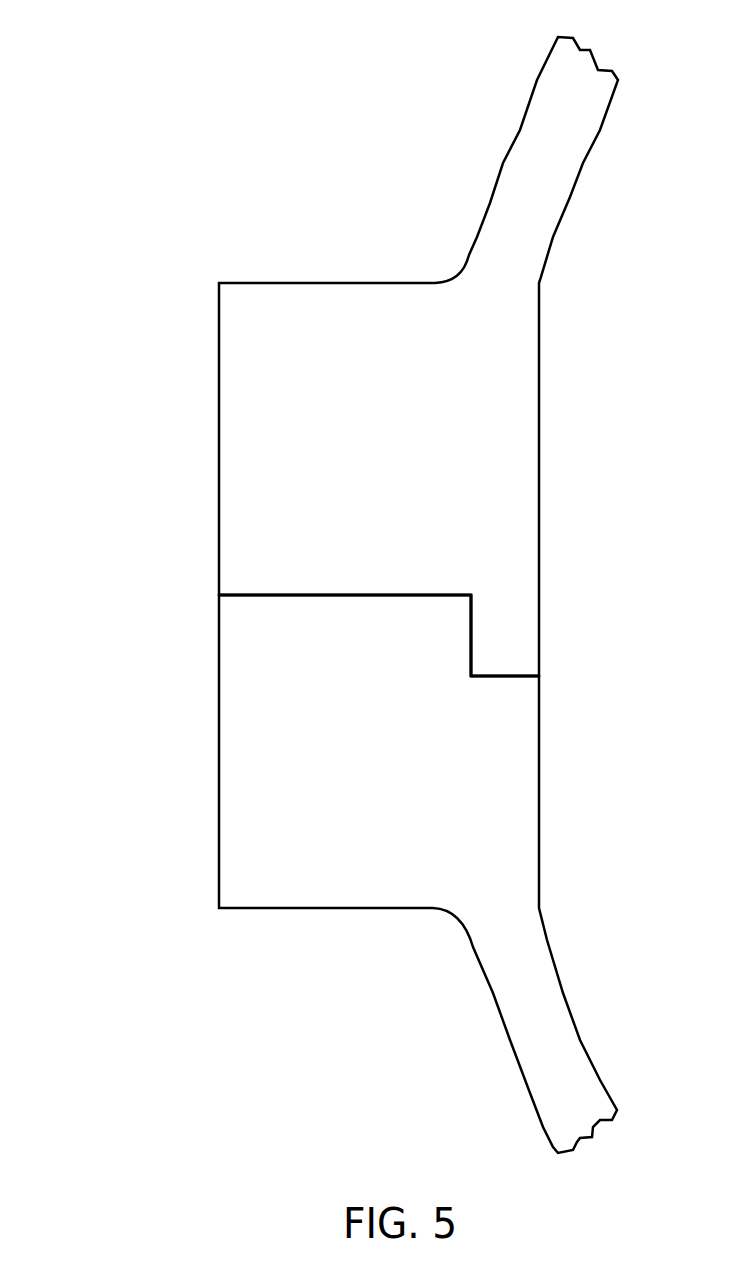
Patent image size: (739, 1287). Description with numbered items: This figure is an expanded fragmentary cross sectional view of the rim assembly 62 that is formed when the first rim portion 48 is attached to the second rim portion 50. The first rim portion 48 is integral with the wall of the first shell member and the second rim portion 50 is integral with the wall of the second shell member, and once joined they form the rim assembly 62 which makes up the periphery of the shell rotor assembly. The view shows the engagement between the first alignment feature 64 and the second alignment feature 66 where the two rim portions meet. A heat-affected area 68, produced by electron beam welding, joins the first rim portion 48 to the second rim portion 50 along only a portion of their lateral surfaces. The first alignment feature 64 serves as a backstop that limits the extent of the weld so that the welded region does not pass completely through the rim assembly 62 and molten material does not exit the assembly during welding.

The first rim portion 48 is at (219, 403).
The second rim portion 50 is at (219, 738).
The rim assembly 62 is at (158, 581).
The first alignment feature 64 is at (518, 637).
The second alignment feature 66 is at (508, 676).
The heat-affected area 68 is at (472, 590).